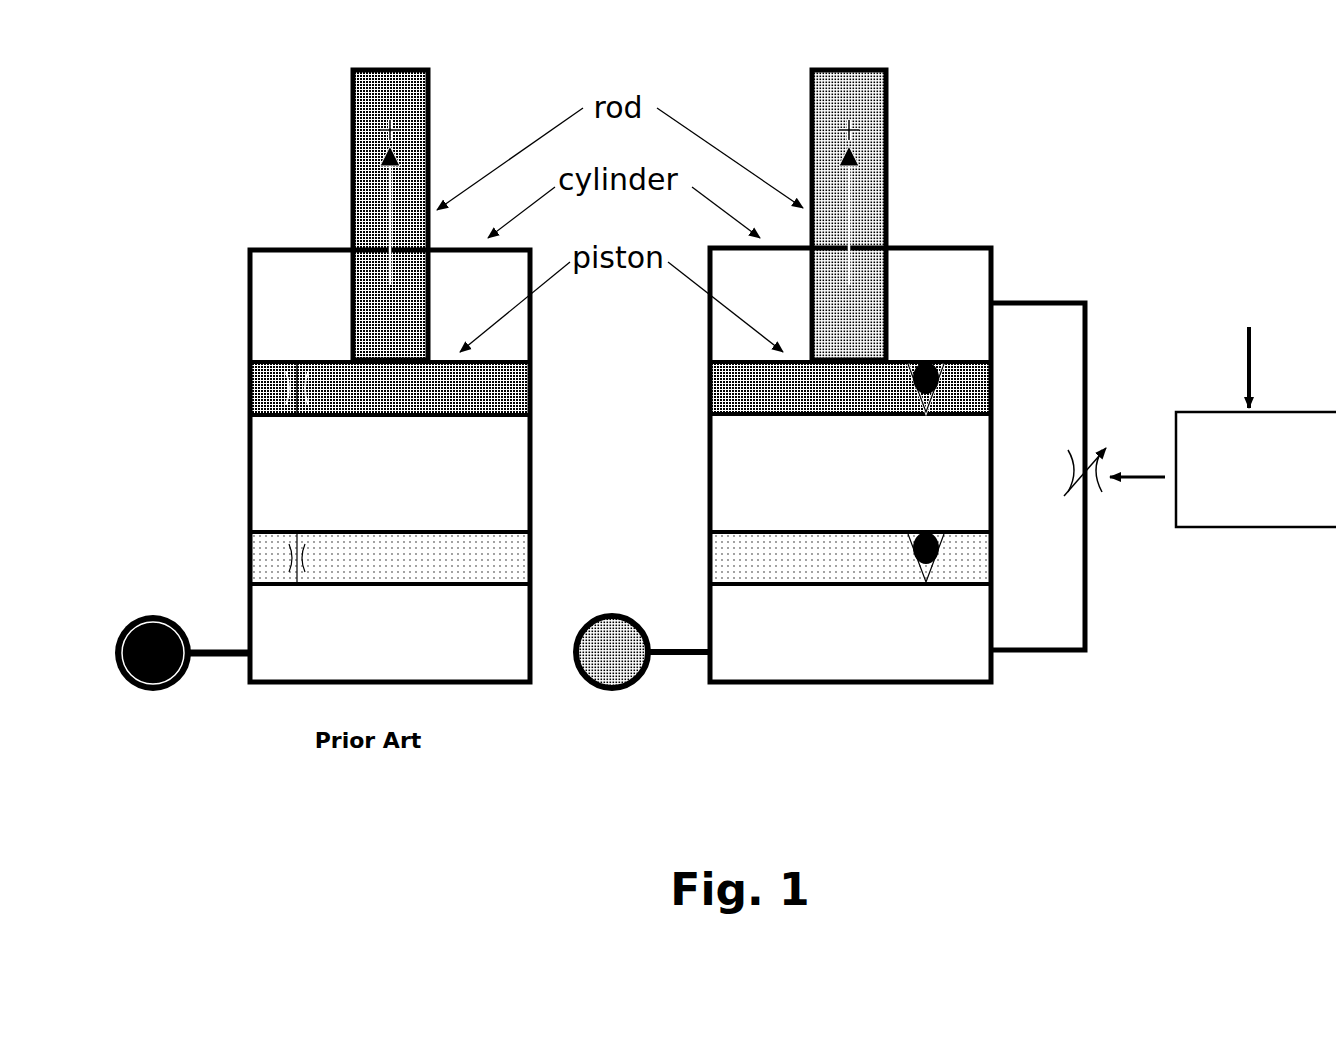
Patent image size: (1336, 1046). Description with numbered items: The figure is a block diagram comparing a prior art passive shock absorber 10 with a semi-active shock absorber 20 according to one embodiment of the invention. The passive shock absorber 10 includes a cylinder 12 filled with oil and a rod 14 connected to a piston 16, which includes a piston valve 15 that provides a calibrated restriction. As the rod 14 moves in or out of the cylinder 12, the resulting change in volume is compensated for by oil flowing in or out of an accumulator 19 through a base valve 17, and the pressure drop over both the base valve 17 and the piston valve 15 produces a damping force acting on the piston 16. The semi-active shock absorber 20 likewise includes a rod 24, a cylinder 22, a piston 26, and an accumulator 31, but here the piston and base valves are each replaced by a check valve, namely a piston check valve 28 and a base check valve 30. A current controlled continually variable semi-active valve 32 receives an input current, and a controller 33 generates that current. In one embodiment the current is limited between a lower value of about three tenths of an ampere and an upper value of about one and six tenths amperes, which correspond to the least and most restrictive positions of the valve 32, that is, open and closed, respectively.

The passive shock absorber 10 is at (359, 413).
The cylinder 12 is at (267, 247).
The rod 14 is at (357, 150).
The piston valve 15 is at (280, 381).
The piston 16 is at (394, 387).
The base valve 17 is at (283, 558).
The accumulator 19 is at (153, 690).
The semi-active shock absorber 20 is at (956, 413).
The cylinder 22 is at (936, 245).
The rod 24 is at (876, 132).
The piston 26 is at (870, 332).
The piston check valve 28 is at (945, 385).
The base check valve 30 is at (935, 568).
The accumulator 31 is at (637, 685).
The continually variable semi-active valve 32 is at (1093, 508).
The controller 33 is at (1256, 405).